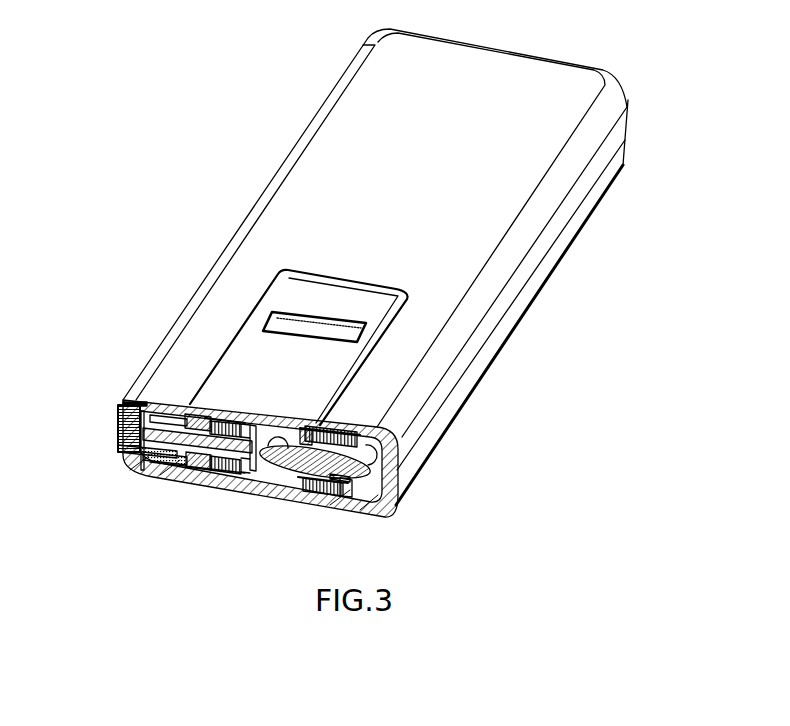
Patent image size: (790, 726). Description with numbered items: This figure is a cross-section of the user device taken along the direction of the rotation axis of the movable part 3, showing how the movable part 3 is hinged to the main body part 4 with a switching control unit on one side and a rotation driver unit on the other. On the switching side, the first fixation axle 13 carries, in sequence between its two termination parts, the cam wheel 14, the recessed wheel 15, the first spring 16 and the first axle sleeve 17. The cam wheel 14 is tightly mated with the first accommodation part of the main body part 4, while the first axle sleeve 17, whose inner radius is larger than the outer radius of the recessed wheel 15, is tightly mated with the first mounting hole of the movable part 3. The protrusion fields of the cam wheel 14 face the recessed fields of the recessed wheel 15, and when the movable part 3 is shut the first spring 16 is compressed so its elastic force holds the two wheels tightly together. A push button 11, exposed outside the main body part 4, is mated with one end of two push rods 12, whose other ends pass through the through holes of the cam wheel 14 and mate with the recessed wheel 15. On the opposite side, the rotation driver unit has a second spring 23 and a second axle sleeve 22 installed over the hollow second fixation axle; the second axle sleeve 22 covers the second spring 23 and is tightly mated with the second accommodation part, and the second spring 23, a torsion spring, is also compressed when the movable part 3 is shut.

The movable part 3 is at (268, 372).
The main body part 4 is at (283, 242).
The push button 11 is at (121, 422).
The push rods 12 is at (134, 400).
The first fixation axle 13 is at (177, 470).
The cam wheel 14 is at (172, 407).
The recessed wheel 15 is at (200, 468).
The first spring 16 is at (237, 468).
The first axle sleeve 17 is at (203, 408).
The second axle sleeve 22 is at (311, 482).
The second spring 23 is at (340, 486).